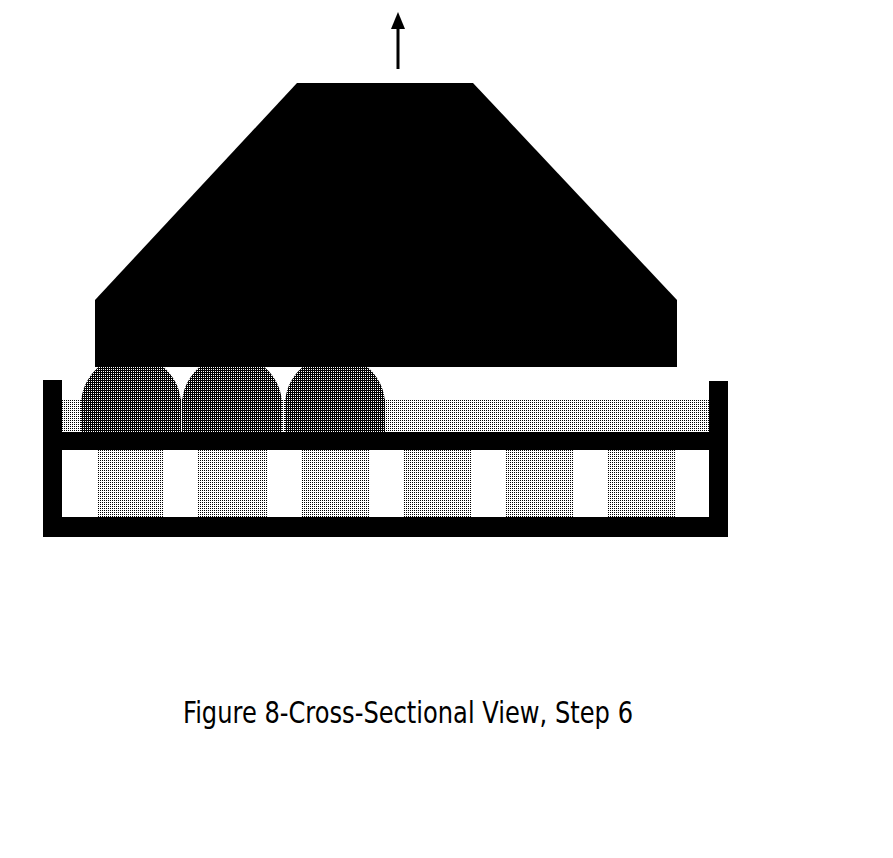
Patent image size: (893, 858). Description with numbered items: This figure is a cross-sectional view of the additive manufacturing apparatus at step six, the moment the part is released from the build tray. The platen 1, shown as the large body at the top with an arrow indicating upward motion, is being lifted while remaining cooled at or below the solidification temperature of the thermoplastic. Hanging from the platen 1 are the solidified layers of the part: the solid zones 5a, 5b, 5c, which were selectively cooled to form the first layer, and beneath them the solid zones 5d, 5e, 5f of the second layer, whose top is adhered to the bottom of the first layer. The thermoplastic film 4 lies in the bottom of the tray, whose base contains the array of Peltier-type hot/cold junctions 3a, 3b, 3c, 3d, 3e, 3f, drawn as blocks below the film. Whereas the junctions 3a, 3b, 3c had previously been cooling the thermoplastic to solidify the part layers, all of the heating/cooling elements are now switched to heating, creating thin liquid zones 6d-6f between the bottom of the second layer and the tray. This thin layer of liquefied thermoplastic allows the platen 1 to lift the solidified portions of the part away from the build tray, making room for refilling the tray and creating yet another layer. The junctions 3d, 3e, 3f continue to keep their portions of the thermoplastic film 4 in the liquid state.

The platen 1 is at (488, 100).
The thermoplastic film 4 is at (697, 385).
The Peltier-type hot/cold junction 3a is at (130, 483).
The Peltier-type hot/cold junction 3b is at (232, 483).
The Peltier-type hot/cold junction 3c is at (335, 483).
The Peltier-type hot/cold junction 3d is at (437, 483).
The Peltier-type hot/cold junction 3e is at (539, 483).
The Peltier-type hot/cold junction 3f is at (641, 483).
The solid zone 5a is at (131, 380).
The solid zone 5b is at (232, 380).
The solid zone 5c is at (335, 380).
The solid zone 5d is at (131, 415).
The solid zone 5e is at (232, 415).
The solid zone 5f is at (335, 415).
The thin liquid zones 6d-6f is at (387, 430).